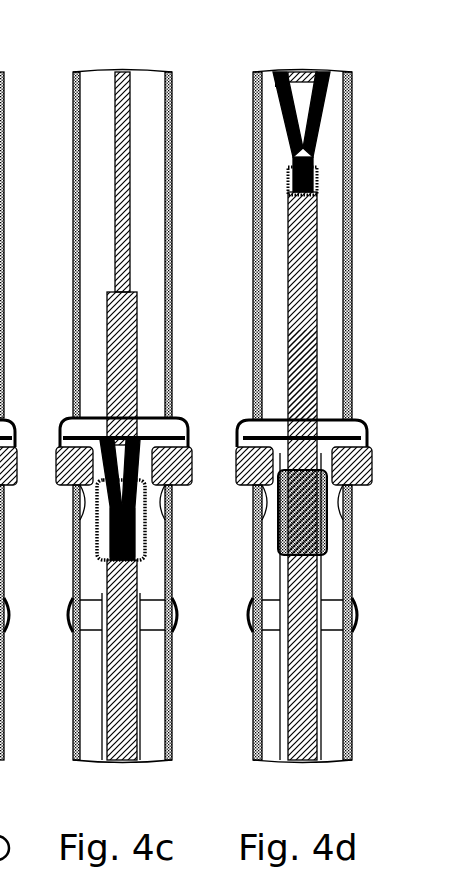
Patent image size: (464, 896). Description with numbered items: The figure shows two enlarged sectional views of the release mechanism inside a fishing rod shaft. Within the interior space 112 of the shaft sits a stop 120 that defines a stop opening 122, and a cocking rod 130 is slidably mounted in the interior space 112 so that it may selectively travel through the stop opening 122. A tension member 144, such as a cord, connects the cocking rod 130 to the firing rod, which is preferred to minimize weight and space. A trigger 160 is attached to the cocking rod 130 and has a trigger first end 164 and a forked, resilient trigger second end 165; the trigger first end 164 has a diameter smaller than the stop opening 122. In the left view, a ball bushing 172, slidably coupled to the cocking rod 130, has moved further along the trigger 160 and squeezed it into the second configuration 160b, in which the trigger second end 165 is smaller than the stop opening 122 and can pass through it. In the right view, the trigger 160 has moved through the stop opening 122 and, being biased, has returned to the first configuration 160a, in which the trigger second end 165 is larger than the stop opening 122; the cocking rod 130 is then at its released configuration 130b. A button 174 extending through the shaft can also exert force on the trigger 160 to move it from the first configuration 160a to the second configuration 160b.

In FIG. 4c, the interior space 112 is at (88, 712).
In FIG. 4d, the interior space 112 is at (270, 673).
In FIG. 4d, the stop 120 is at (262, 434).
In FIG. 4c, the stop opening 122 is at (142, 436).
In FIG. 4d, the stop opening 122 is at (322, 434).
In FIG. 4c, the cocking rod 130 is at (107, 308).
In FIG. 4d, the cocking rod 130 is at (318, 280).
In FIG. 4d, the released configuration 130b is at (328, 354).
In FIG. 4c, the tension member 144 is at (115, 138).
In FIG. 4c, the trigger 160 is at (100, 516).
In FIG. 4d, the trigger 160 is at (287, 140).
In FIG. 4d, the first configuration 160a is at (270, 118).
In FIG. 4c, the second configuration 160b is at (92, 432).
In FIG. 4c, the trigger first end 164 is at (130, 560).
In FIG. 4d, the trigger first end 164 is at (308, 193).
In FIG. 4d, the trigger second end 165 is at (282, 72).
In FIG. 4c, the ball bushing 172 is at (98, 548).
In FIG. 4d, the ball bushing 172 is at (280, 528).
In FIG. 4d, the button 174 is at (370, 465).